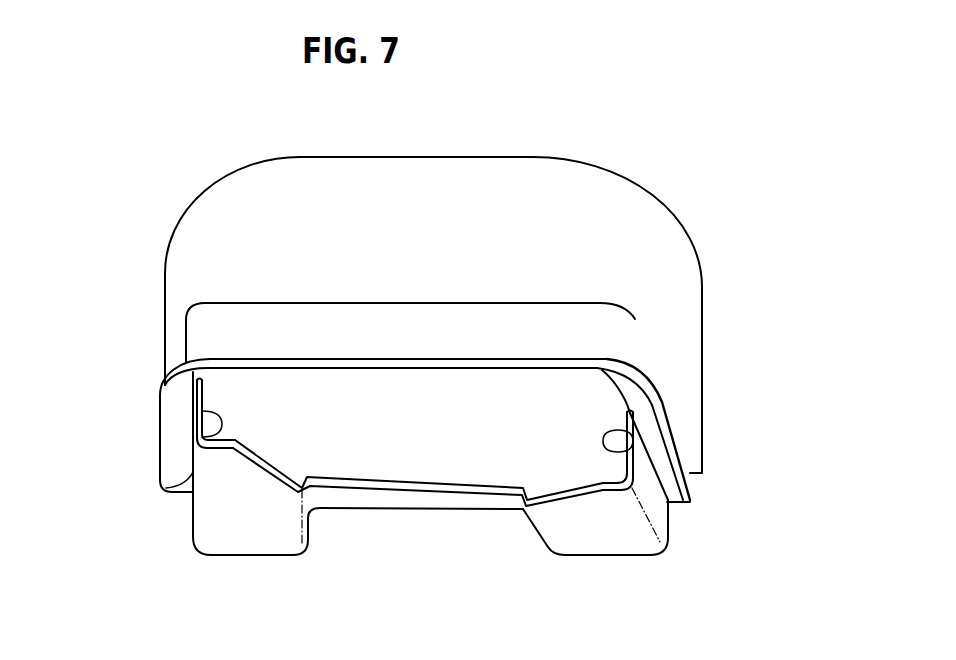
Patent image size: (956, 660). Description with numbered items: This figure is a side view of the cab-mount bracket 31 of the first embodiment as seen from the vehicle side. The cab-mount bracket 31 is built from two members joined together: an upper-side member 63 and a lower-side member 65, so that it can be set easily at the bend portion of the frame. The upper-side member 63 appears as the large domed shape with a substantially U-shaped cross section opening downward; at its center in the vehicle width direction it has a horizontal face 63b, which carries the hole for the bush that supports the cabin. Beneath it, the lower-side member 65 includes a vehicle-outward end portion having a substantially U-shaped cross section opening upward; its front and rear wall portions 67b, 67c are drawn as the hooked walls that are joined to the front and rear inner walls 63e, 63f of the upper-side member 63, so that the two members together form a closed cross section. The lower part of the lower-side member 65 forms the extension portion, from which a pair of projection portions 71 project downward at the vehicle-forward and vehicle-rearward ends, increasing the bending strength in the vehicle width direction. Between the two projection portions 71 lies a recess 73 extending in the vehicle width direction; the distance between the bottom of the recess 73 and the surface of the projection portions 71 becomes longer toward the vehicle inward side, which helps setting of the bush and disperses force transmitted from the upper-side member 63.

The cab-mount bracket 31 is at (720, 203).
The upper-side member 63 is at (703, 332).
The horizontal face 63b is at (453, 303).
The front inner wall 63e is at (175, 422).
The rear inner wall 63f is at (660, 400).
The lower-side member 65 is at (670, 515).
The front wall portion 67b is at (203, 440).
The rear wall portion 67c is at (635, 437).
The projection portions 71 is at (258, 555).
The recess 73 is at (441, 518).